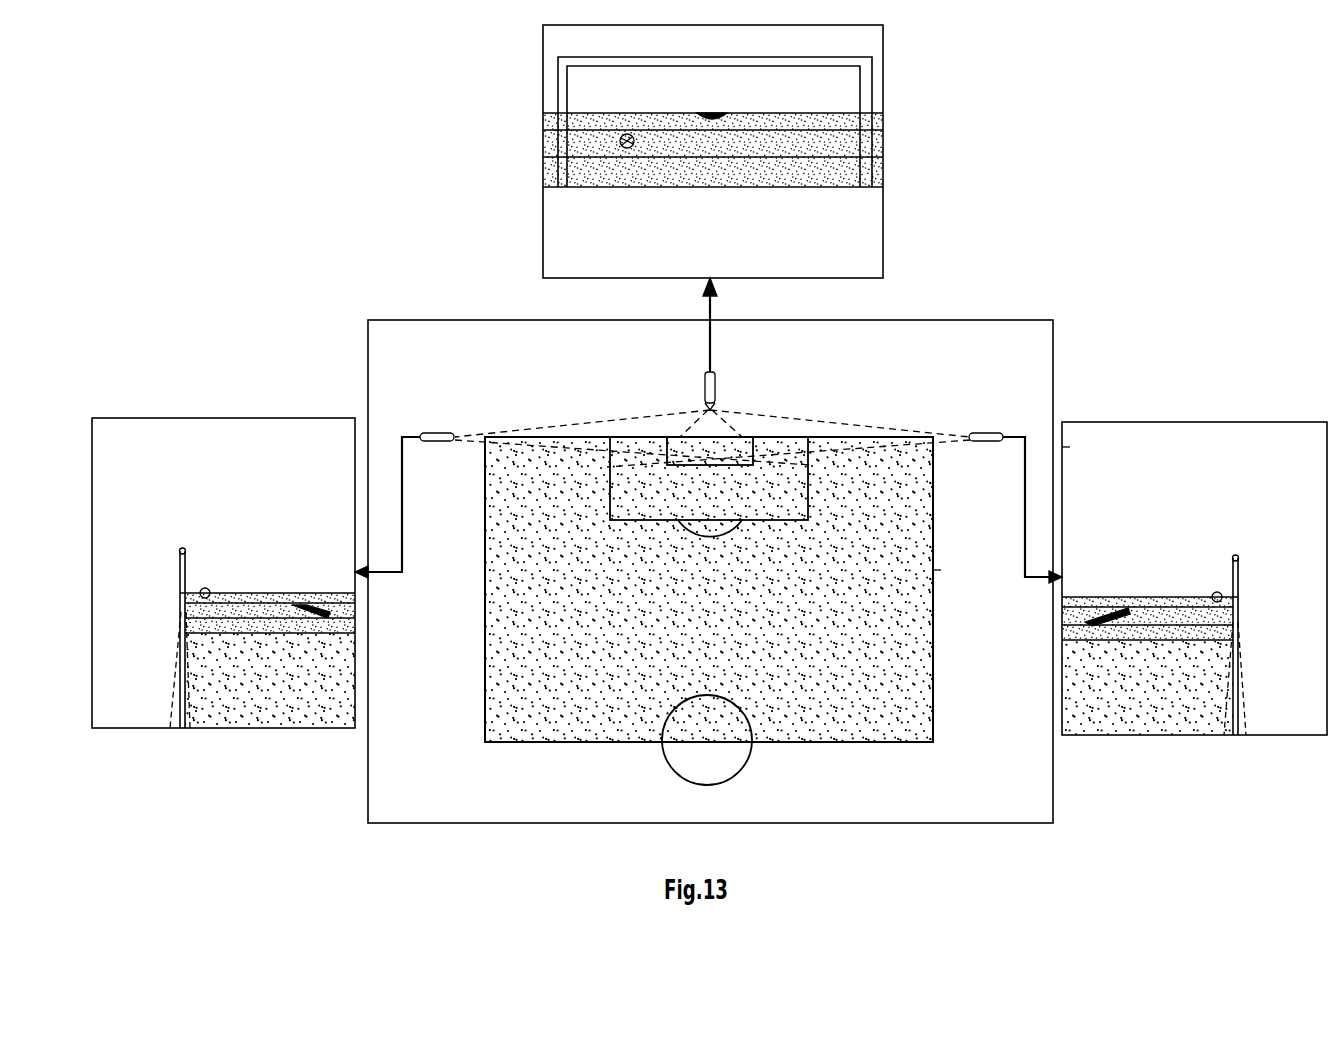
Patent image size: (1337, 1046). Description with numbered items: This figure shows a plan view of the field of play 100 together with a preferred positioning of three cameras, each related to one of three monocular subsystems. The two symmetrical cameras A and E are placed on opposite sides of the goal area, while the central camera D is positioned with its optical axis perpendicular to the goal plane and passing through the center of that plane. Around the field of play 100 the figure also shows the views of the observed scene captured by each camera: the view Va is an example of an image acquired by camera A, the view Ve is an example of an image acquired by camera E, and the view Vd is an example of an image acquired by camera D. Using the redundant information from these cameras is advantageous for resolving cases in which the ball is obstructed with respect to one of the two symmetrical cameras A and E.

The field of play 100 is at (1053, 340).
The camera E is at (582, 487).
The camera A is at (834, 490).
The camera D is at (712, 357).
The view Ve VE is at (248, 418).
The view Va VA is at (1260, 422).
The view Vd VD is at (883, 215).